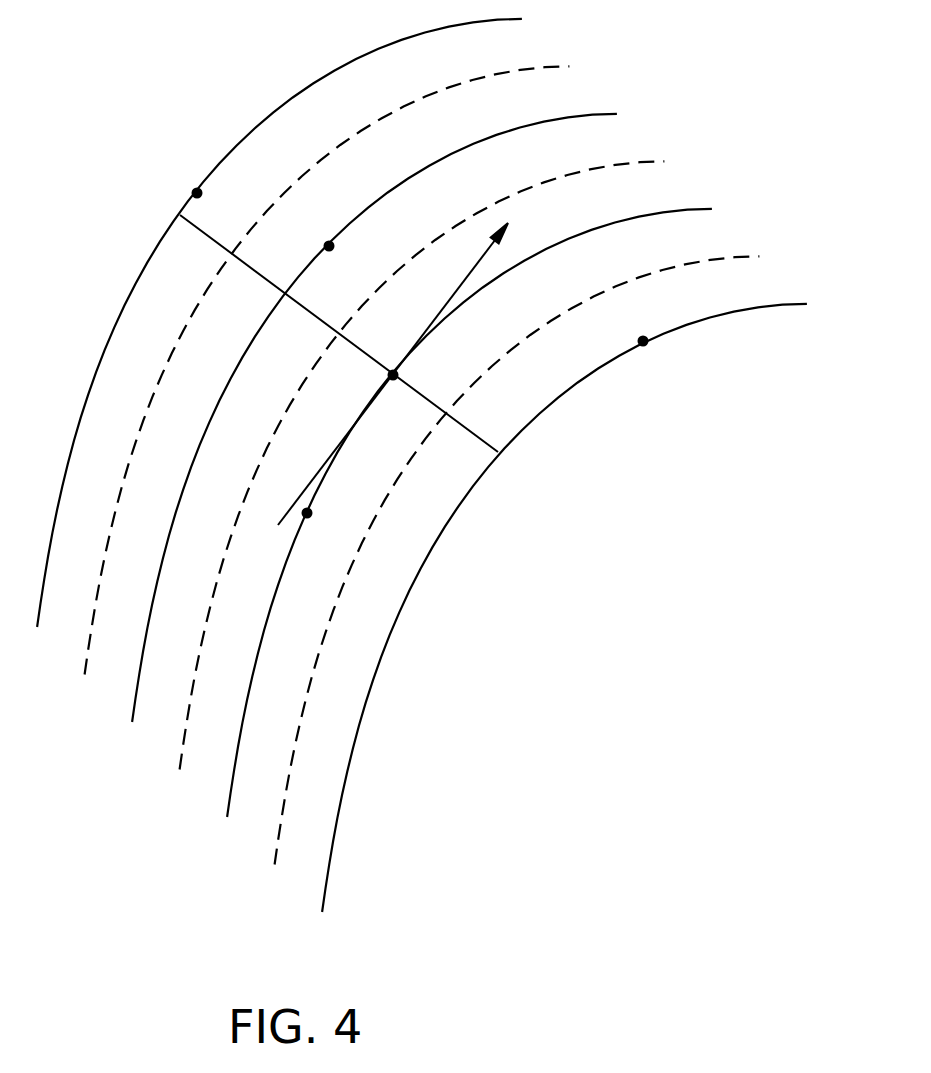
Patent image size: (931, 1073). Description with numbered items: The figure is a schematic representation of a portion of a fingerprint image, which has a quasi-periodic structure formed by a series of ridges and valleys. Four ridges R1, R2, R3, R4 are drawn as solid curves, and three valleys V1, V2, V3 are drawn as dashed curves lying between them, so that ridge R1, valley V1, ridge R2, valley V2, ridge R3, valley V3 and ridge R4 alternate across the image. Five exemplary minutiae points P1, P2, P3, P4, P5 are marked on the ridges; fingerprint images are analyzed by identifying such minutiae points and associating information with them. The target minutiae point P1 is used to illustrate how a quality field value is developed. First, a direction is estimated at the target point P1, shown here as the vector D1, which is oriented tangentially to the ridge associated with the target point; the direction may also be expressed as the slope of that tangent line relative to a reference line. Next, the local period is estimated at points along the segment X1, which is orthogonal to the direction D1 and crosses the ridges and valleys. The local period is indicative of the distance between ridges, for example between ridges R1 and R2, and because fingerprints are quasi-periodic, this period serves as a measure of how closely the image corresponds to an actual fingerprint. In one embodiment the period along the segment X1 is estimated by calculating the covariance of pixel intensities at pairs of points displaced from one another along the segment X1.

The ridge R1 is at (300, 317).
The valley V1 is at (347, 365).
The ridge R2 is at (394, 413).
The valley V2 is at (442, 460).
The ridge R3 is at (489, 507).
The valley V3 is at (537, 555).
The ridge R4 is at (585, 602).
The segment X1 is at (252, 266).
The vector D1 is at (403, 363).
The minutiae point P1 is at (397, 371).
The minutiae point P2 is at (646, 344).
The minutiae point P3 is at (333, 247).
The minutiae point P4 is at (311, 515).
The minutiae point P5 is at (201, 194).